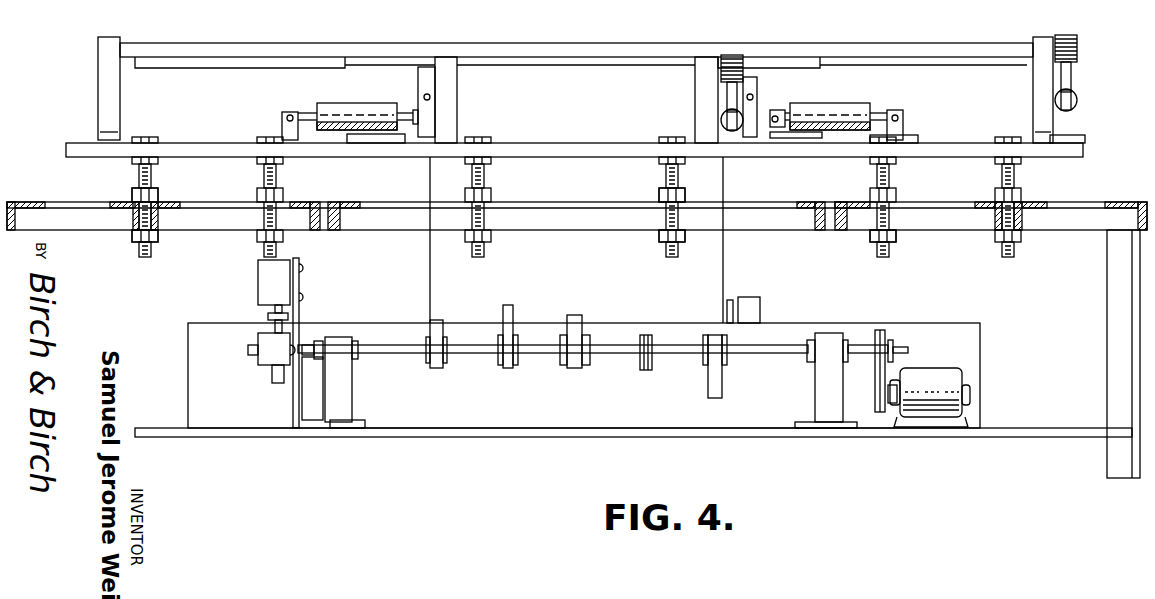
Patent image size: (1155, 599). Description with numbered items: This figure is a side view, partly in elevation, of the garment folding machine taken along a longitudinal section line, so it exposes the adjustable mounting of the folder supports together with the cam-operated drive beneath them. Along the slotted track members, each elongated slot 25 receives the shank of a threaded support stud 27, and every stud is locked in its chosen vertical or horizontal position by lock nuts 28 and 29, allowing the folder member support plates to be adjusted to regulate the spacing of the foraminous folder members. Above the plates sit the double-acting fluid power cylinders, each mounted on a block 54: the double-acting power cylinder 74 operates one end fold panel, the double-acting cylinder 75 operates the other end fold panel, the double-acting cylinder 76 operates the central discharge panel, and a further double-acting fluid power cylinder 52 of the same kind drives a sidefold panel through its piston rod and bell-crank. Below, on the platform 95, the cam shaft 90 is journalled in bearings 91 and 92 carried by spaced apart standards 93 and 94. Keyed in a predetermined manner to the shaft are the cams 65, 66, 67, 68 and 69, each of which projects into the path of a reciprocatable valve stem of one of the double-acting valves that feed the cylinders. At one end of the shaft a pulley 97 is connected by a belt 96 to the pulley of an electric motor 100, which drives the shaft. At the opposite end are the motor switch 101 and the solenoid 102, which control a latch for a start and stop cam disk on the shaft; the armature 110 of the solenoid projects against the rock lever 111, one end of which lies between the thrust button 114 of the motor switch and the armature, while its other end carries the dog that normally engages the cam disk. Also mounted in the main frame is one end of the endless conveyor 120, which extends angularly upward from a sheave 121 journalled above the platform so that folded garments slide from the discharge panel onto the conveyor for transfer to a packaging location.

The slot 25 is at (832, 202).
The threaded support stud 27 is at (158, 180).
The lock nut 28 is at (133, 197).
The lock nut 29 is at (160, 236).
The double-acting fluid power cylinder 52 is at (1080, 118).
The block 54 is at (333, 143).
The cam 65 is at (722, 380).
The cam 66 is at (646, 370).
The cam 67 is at (572, 360).
The cam 68 is at (514, 319).
The cam 69 is at (432, 323).
The double-acting power cylinder 74 is at (341, 113).
The double-acting cylinder 75 is at (836, 106).
The double-acting cylinder 76 is at (720, 118).
The cam shaft 90 is at (760, 348).
The bearing 91 is at (848, 338).
The bearing 92 is at (353, 344).
The standard 93 is at (835, 388).
The standard 94 is at (347, 389).
The platform 95 is at (380, 428).
The belt 96 is at (880, 372).
The pulley 97 is at (885, 332).
The electric motor 100 is at (945, 378).
The motor switch 101 is at (270, 358).
The solenoid 102 is at (280, 277).
The armature 110 is at (273, 306).
The rock lever 111 is at (270, 317).
The thrust button 114 is at (273, 328).
The endless conveyor 120 is at (712, 266).
The sheave 121 is at (429, 303).